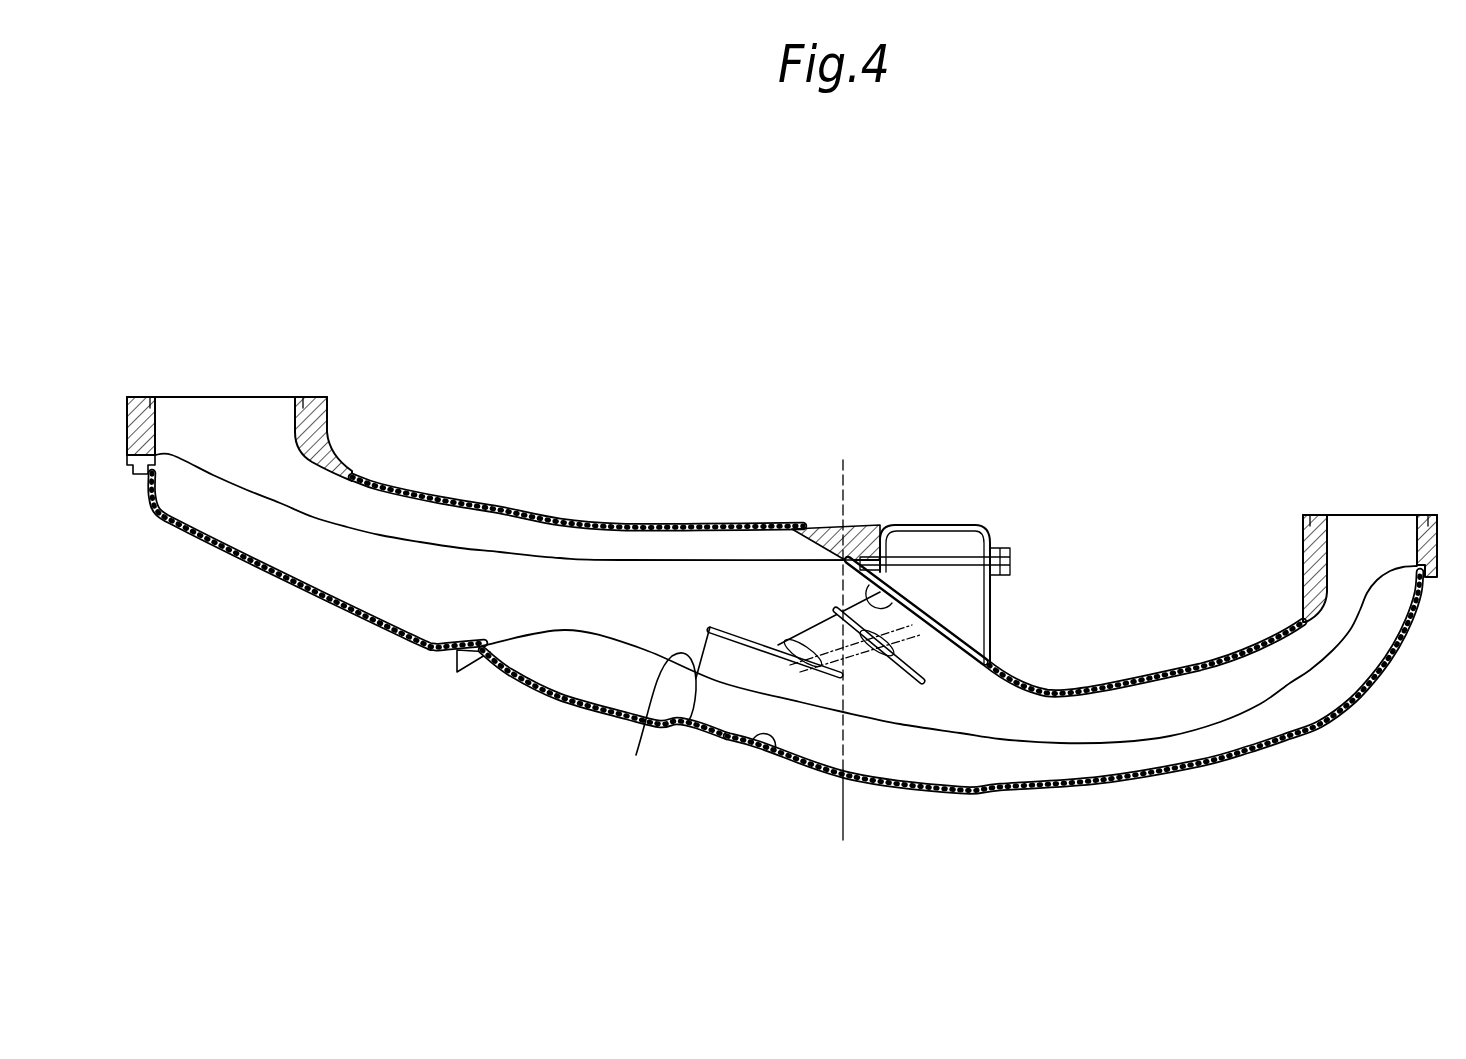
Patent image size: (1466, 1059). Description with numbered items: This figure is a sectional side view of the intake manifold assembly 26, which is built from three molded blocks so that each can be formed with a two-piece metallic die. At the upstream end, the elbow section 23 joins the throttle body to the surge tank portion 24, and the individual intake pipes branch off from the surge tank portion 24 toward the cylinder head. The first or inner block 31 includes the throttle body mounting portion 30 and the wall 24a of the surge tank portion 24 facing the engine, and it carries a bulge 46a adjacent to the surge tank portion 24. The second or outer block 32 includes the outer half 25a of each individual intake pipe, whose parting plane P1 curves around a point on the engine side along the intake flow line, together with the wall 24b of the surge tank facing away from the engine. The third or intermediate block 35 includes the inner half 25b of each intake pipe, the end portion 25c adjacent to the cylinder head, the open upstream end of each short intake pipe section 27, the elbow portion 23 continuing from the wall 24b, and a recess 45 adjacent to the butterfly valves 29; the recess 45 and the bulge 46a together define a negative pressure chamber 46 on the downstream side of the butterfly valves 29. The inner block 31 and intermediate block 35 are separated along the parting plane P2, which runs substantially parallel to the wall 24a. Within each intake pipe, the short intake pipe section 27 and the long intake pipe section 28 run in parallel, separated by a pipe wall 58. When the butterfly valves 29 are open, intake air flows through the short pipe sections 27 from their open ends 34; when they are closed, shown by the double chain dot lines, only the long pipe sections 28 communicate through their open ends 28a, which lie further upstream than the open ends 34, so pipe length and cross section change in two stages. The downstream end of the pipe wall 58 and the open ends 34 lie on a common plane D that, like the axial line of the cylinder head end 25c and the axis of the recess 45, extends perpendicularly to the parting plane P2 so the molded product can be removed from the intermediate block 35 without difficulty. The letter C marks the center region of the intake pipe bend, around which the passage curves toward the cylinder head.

The elbow section 23 is at (296, 592).
The surge tank portion 24 is at (545, 603).
The wall of the surge tank portion facing the engine 24a is at (552, 518).
The wall of the surge tank facing away from the engine 24b is at (585, 714).
The outer half of each individual intake pipe 25a is at (1108, 792).
The inner half of each individual intake pipe 25b is at (1132, 682).
The end portion of each individual intake pipe adjacent to the cylinder head 25c is at (1405, 515).
The intake manifold assembly 26 is at (866, 508).
The short intake pipe section 27 is at (888, 600).
The long intake pipe section 28 is at (757, 744).
The open end of the long pipe section 28a is at (650, 723).
The butterfly valve 29 is at (882, 670).
The throttle body mounting portion 30 is at (135, 396).
The inner block 31 is at (692, 522).
The outer block 32 is at (1205, 778).
The open end of the short pipe section 34 is at (823, 627).
The intermediate block 35 is at (1035, 675).
The recess 45 is at (975, 650).
The negative pressure chamber 46 is at (960, 606).
The bulge 46a is at (958, 524).
The pipe wall 58 is at (788, 657).
The center C is at (1158, 723).
The plane D is at (843, 802).
The parting plane P1 is at (1275, 692).
The parting plane P2 is at (445, 546).